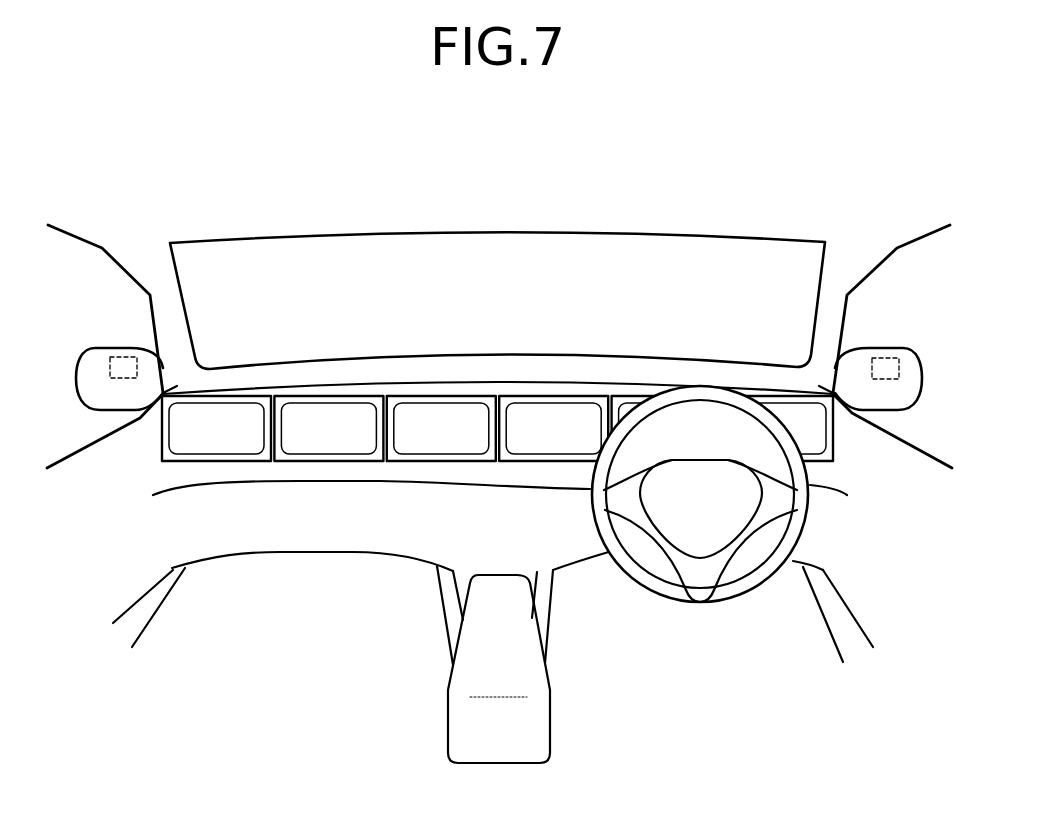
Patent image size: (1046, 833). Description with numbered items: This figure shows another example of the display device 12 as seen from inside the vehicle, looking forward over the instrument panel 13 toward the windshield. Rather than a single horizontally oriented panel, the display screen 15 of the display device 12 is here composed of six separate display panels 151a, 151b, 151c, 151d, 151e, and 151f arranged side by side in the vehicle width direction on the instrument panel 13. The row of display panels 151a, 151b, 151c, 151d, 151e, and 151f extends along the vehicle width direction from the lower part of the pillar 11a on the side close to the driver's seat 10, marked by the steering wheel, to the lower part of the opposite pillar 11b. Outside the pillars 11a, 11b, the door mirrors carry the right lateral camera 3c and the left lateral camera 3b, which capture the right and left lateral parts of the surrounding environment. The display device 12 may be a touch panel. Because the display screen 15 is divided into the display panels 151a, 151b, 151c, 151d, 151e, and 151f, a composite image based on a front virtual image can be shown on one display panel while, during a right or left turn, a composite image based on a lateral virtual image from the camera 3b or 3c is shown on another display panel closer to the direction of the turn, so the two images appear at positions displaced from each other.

The left lateral camera 3b is at (122, 352).
The right lateral camera 3c is at (888, 355).
The driver's seat 10 is at (793, 622).
The pillar 11a is at (820, 327).
The pillar 11b is at (171, 330).
The display device 12 is at (497, 353).
The instrument panel 13 is at (425, 478).
The display screen 15 is at (702, 310).
The display panel 151a is at (240, 406).
The display panel 151b is at (335, 412).
The display panel 151c is at (434, 411).
The display panel 151d is at (555, 412).
The display panel 151e is at (632, 408).
The display panel 151f is at (777, 410).